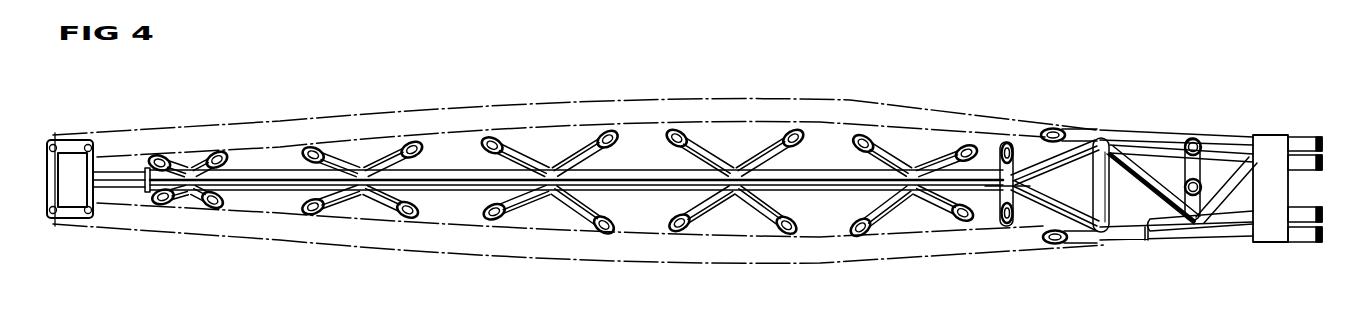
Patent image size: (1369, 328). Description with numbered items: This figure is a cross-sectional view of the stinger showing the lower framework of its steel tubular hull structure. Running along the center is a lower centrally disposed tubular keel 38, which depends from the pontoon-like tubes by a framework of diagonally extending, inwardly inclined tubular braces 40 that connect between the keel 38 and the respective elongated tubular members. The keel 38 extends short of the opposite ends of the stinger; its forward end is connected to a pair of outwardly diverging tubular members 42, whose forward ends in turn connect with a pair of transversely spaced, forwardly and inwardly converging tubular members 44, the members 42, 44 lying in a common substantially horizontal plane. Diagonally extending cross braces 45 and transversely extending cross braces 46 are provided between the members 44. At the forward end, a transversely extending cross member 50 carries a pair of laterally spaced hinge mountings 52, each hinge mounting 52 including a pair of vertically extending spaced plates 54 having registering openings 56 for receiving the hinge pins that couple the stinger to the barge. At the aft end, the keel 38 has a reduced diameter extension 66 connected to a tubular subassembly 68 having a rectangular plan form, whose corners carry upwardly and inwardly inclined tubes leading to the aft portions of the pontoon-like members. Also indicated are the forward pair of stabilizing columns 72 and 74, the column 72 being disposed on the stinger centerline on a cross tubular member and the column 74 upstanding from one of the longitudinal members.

The tubular keel 38 is at (443, 192).
The tubular braces 40 is at (582, 147).
The outwardly diverging tubular members 42 is at (1040, 220).
The forwardly and inwardly converging tubular members 44 is at (1142, 237).
The diagonally extending cross braces 45 is at (1227, 217).
The transversely extending cross braces 46 is at (1115, 172).
The cross member 50 is at (1270, 137).
The hinge mountings 52 is at (1318, 137).
The vertically extending spaced plates 54 is at (1328, 152).
The registering openings 56 is at (1327, 228).
The reduced diameter extension 66 is at (579, 181).
The tubular subassembly 68 is at (74, 229).
The forward column 72 is at (1203, 173).
The forward column 74 is at (1190, 180).